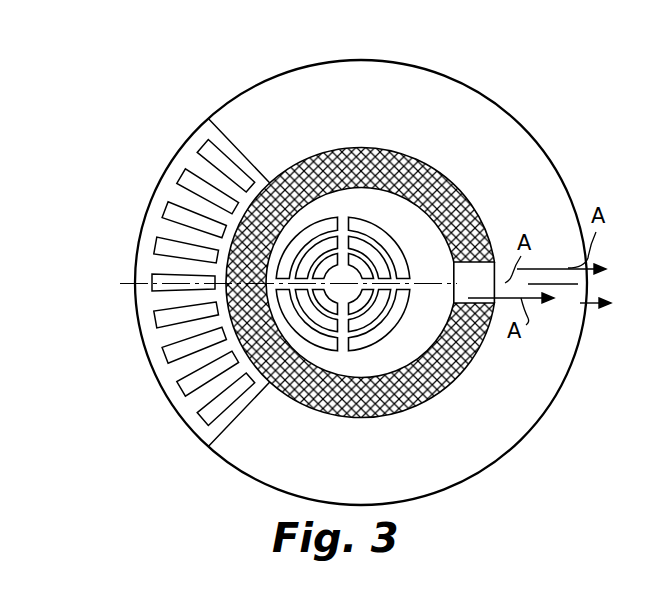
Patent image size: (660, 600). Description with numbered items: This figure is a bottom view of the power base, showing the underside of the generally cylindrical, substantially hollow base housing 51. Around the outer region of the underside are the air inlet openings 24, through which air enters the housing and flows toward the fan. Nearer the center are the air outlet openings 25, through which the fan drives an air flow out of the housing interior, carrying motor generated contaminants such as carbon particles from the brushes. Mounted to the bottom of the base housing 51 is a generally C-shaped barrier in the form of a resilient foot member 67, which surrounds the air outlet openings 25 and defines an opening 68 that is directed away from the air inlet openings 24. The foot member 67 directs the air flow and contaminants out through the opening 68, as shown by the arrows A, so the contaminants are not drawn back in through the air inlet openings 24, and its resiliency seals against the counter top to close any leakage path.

The air inlet openings 24 is at (172, 213).
The air outlet openings 25 is at (298, 236).
The base housing 51 is at (231, 466).
The resilient foot member 67 is at (445, 180).
The opening 68 is at (483, 272).